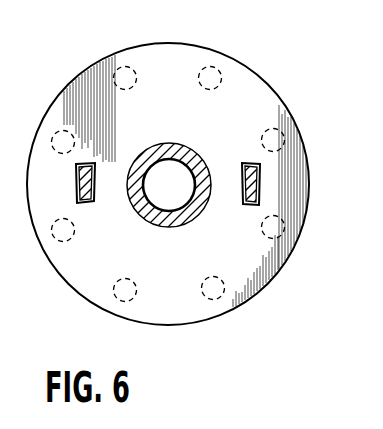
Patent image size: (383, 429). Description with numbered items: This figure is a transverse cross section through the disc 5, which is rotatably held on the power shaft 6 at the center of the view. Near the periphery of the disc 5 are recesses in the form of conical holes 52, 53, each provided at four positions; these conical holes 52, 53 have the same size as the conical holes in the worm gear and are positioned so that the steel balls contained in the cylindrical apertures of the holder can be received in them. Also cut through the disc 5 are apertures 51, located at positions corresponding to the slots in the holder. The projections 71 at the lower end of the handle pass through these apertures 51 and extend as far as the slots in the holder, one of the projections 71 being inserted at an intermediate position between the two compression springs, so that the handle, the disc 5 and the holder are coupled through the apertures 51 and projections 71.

The disc 5 is at (112, 55).
The power shaft 6 is at (148, 168).
The apertures 51 is at (87, 204).
The conical holes 52 is at (222, 76).
The conical holes 53 is at (112, 76).
The projections 71 is at (77, 174).